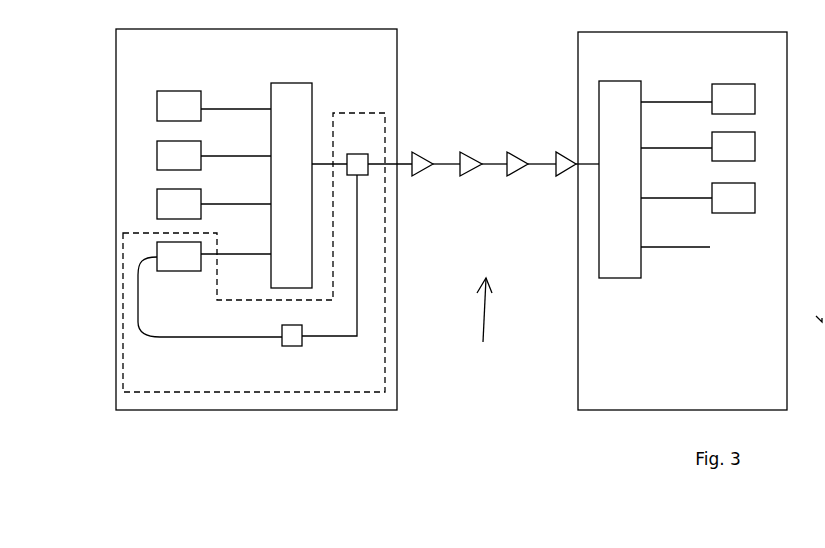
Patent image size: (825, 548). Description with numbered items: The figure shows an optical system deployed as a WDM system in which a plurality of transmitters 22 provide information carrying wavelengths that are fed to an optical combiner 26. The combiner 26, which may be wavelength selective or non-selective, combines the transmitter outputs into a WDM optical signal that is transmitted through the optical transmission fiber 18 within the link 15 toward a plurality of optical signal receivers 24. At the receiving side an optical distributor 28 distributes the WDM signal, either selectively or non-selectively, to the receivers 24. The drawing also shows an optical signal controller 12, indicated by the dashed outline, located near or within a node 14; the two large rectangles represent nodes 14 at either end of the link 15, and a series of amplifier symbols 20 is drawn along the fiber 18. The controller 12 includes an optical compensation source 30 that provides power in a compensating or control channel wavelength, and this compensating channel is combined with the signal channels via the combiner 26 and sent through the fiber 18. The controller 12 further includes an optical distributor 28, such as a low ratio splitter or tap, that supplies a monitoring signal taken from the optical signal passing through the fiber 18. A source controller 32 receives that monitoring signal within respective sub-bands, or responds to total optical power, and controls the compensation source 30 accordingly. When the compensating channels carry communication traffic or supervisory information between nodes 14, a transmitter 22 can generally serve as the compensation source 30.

The optical signal controller 12 is at (123, 353).
The node 14 is at (400, 47).
The link 15 is at (483, 320).
The optical transmission fiber 18 is at (539, 162).
The optical amplifiers 20 is at (427, 168).
The transmitter 22 is at (157, 98).
The optical signal receiver 24 is at (757, 82).
The optical combiner 26 is at (295, 83).
The optical distributor 28 is at (357, 153).
The optical compensation source 30 is at (182, 272).
The source controller 32 is at (294, 347).